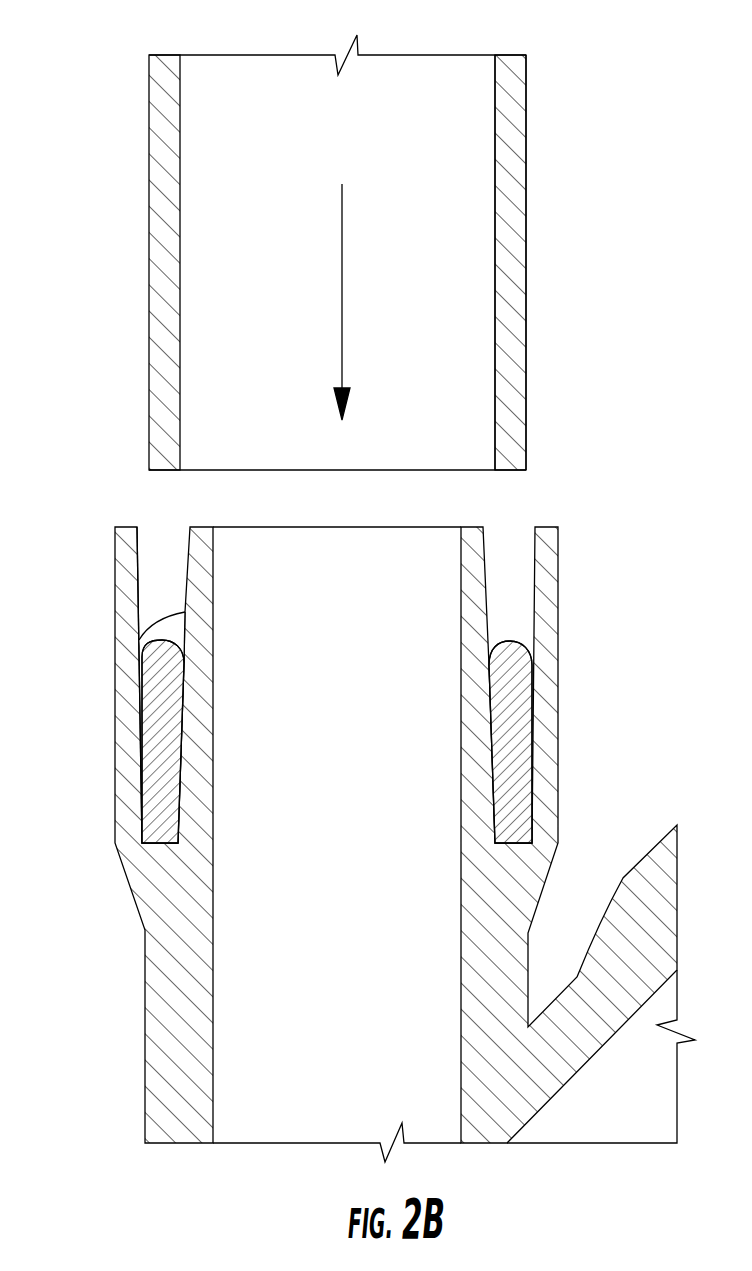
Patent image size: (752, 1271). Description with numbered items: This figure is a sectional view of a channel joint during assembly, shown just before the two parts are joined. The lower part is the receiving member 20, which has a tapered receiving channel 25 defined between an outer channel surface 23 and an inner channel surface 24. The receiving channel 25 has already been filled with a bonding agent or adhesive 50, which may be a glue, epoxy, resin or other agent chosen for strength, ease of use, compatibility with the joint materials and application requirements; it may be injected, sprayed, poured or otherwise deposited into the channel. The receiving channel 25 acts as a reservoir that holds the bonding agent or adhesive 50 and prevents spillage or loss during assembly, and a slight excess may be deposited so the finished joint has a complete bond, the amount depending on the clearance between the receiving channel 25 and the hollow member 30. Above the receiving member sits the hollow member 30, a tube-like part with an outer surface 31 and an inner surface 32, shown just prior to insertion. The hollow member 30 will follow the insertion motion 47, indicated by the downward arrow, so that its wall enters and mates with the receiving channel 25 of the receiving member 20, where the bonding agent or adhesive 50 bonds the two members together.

The receiving member 20 is at (150, 885).
The outer channel surface 23 is at (137, 604).
The inner channel surface 24 is at (140, 637).
The receiving channel 25 is at (162, 574).
The hollow member 30 is at (165, 128).
The outer surface 31 is at (530, 150).
The inner surface 32 is at (494, 91).
The insertion motion 47 is at (343, 290).
The bonding agent or adhesive 50 is at (158, 713).